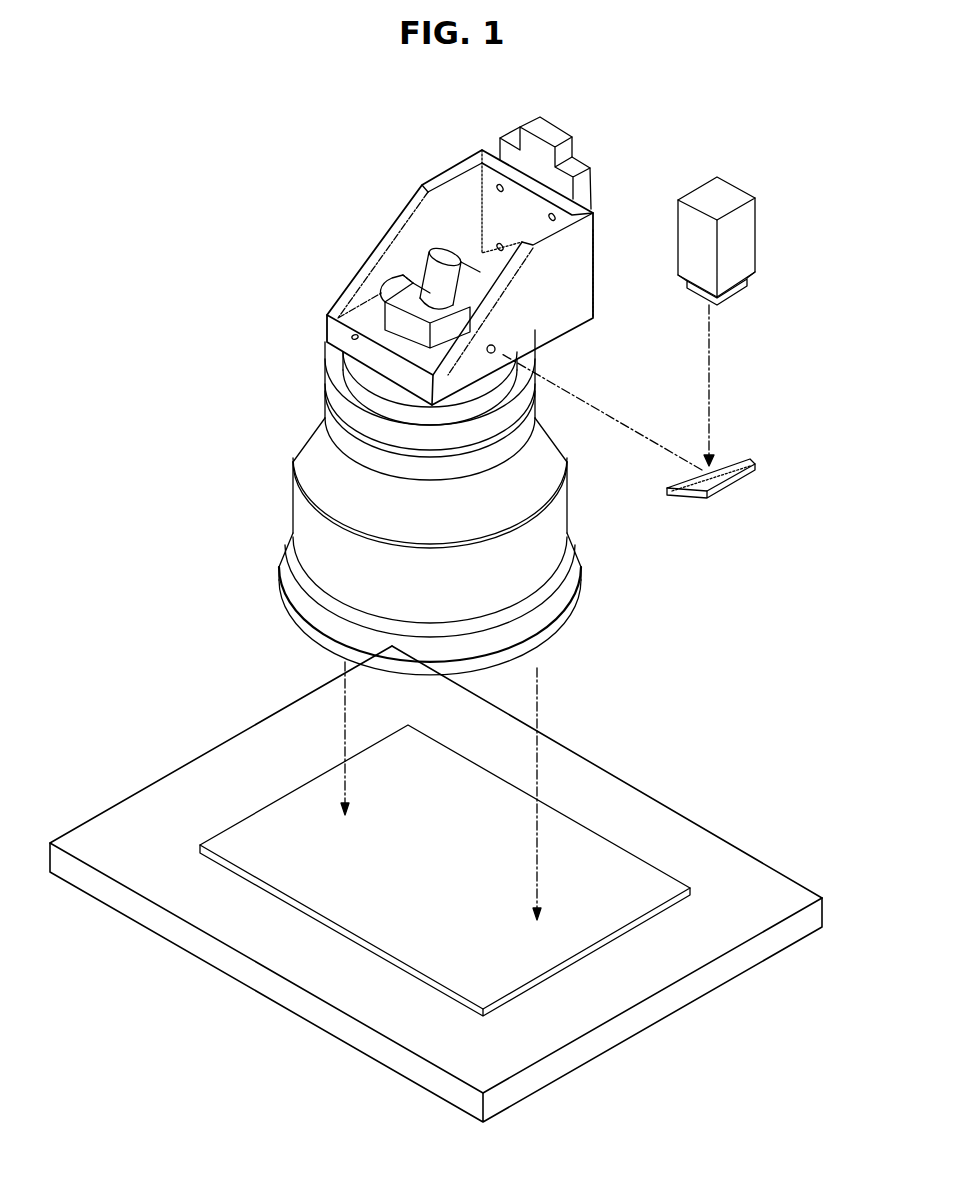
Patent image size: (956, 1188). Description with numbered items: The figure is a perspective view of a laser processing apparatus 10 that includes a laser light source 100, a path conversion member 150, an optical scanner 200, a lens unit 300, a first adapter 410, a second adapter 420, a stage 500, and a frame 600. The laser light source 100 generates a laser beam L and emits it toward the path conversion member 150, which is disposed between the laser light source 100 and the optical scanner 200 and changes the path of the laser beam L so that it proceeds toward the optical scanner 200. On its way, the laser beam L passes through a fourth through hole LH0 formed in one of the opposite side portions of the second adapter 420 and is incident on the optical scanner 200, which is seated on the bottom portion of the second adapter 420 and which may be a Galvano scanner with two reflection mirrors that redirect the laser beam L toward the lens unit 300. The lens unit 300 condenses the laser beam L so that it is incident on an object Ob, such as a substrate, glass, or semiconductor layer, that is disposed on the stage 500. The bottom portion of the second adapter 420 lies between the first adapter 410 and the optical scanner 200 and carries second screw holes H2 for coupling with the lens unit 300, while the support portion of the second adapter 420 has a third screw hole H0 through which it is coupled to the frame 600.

The laser processing apparatus 10 is at (367, 183).
The third screw hole H0 is at (495, 189).
The frame 600 is at (546, 130).
The laser light source 100 is at (723, 192).
The second adapter 420 is at (365, 262).
The optical scanner 200 is at (395, 320).
The second screw hole H2 is at (349, 336).
The first adapter 410 is at (353, 371).
The lens unit 300 is at (313, 458).
The fourth through hole LH0 is at (497, 349).
The laser beam L is at (714, 349).
The path conversion member 150 is at (760, 498).
The object Ob is at (588, 845).
The stage 500 is at (625, 1022).